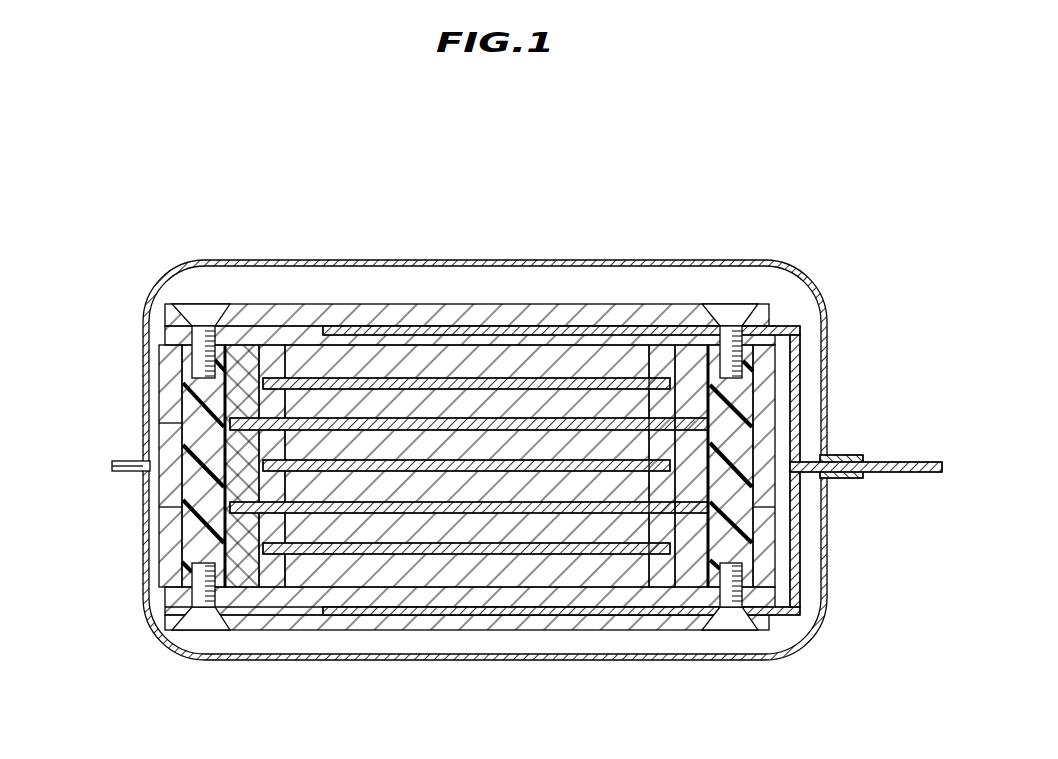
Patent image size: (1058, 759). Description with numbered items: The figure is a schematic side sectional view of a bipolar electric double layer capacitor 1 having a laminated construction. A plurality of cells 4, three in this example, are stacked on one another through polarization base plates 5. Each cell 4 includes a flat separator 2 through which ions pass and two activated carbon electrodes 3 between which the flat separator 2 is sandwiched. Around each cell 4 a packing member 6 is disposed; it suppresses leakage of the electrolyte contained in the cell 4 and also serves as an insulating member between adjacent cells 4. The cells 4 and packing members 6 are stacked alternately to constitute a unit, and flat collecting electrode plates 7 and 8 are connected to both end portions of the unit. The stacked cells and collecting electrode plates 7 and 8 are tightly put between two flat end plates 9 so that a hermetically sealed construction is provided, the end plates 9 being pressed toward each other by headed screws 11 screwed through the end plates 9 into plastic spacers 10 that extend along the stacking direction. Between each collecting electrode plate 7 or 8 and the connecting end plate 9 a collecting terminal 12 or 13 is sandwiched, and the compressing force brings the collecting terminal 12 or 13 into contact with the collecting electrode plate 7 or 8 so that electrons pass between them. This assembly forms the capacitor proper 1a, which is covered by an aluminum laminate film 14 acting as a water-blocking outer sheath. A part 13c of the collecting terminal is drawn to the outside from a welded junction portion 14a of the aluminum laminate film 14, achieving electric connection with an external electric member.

The electric double layer capacitor 1 is at (733, 257).
The capacitor proper 1a is at (648, 298).
The flat separator 2 is at (232, 422).
The activated carbon electrode 3 is at (292, 368).
The cell 4 is at (88, 340).
The polarization base plate 5 is at (180, 423).
The packing member 6 is at (768, 366).
The collecting electrode plate 7 is at (268, 333).
The collecting electrode plate 8 is at (292, 598).
The end plate 9 is at (418, 316).
The plastic spacer 10 is at (748, 530).
The headed screw 11 is at (202, 312).
The collecting terminal 12 is at (546, 330).
The collecting terminal 13 is at (556, 612).
The part of collecting terminal 13c is at (900, 462).
The aluminum laminate film 14 is at (386, 652).
The welded junction portion 14a is at (848, 455).